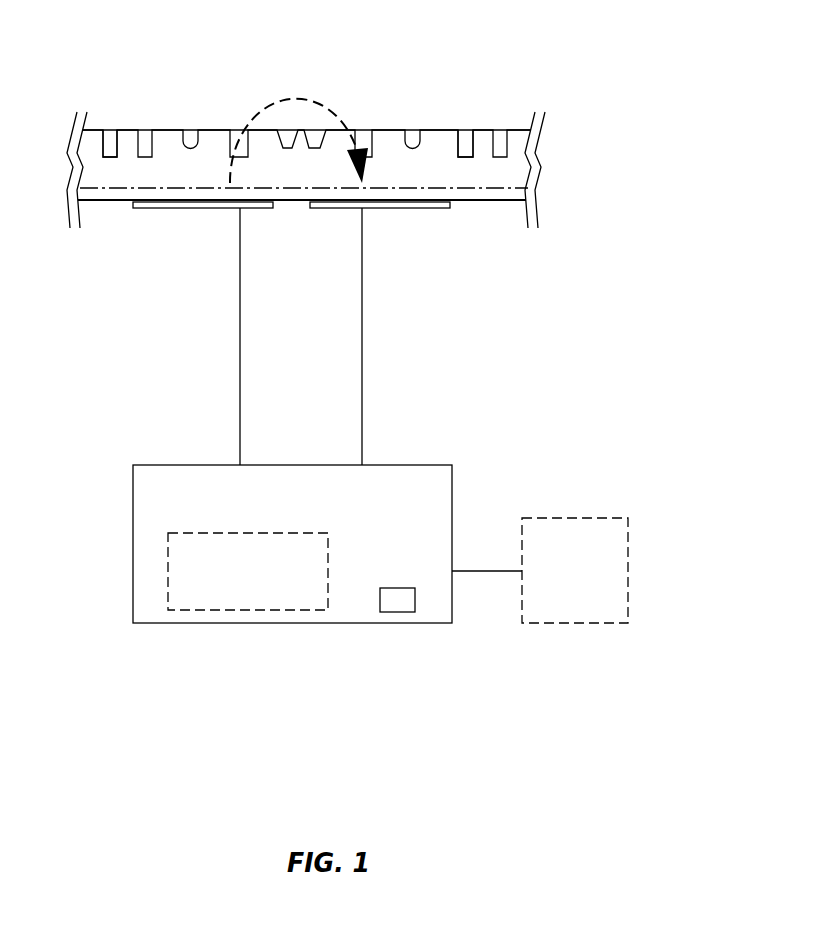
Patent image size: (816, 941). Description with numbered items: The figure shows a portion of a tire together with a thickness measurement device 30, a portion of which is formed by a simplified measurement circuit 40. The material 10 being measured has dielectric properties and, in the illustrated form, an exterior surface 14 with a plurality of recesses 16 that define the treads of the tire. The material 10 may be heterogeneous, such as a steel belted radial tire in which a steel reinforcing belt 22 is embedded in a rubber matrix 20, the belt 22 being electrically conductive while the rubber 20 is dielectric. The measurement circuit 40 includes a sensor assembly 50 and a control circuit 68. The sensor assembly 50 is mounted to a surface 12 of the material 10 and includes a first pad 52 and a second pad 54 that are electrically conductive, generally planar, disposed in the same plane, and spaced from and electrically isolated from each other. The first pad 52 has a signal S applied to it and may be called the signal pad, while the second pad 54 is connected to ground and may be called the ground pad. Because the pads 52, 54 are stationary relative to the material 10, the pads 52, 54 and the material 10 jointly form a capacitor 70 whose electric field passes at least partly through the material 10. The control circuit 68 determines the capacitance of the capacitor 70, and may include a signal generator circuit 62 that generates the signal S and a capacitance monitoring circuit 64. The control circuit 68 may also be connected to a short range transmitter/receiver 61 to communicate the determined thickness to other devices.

The material 10 is at (435, 138).
The surface 12 is at (477, 202).
The exterior surface 14 is at (167, 128).
The recesses 16 is at (108, 122).
The rubber matrix 20 is at (492, 172).
The steel reinforcing belt 22 is at (492, 192).
The measurement device 30 is at (614, 416).
The measurement circuit 40 is at (422, 327).
The sensor assembly 50 is at (407, 238).
The first pad 52 is at (158, 208).
The second pad 54 is at (413, 210).
The transmitter/receiver 61 is at (564, 605).
The signal generator circuit 62 is at (237, 603).
The capacitance monitoring circuit 64 is at (395, 612).
The control circuit 68 is at (291, 518).
The capacitor 70 is at (292, 232).
The signal S is at (312, 103).